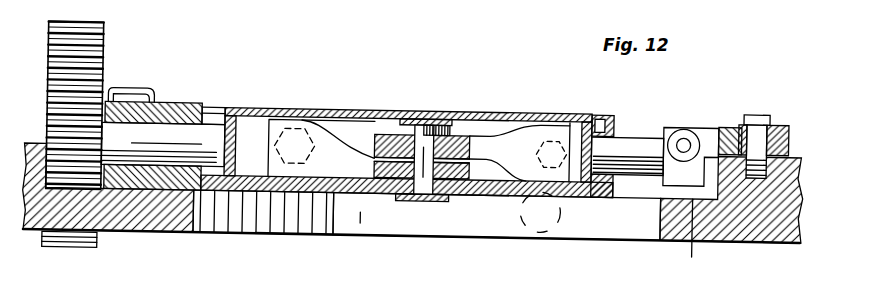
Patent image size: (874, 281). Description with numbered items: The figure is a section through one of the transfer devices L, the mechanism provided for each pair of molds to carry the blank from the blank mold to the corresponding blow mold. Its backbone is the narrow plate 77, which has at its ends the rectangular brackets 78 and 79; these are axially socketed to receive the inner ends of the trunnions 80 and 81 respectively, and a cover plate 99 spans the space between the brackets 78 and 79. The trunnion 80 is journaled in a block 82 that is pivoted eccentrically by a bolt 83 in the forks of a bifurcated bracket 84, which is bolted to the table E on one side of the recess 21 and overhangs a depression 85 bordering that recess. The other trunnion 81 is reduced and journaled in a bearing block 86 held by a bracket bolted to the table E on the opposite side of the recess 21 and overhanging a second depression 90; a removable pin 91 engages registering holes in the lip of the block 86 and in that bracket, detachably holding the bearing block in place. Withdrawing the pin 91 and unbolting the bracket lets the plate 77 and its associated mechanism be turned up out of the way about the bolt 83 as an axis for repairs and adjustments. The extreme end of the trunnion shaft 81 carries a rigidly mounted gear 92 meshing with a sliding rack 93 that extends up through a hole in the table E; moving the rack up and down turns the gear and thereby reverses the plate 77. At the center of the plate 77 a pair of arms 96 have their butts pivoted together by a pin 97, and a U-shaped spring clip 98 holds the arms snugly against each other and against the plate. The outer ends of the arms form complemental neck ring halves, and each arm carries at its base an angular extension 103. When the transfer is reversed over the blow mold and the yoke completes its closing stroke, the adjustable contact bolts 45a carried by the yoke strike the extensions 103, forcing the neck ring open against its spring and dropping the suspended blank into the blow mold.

The recess 21 is at (497, 217).
The adjustable contact bolts 45a is at (540, 212).
The plate 77 is at (513, 183).
The rectangular bracket 78 is at (587, 108).
The rectangular bracket 79 is at (230, 113).
The trunnion 80 is at (635, 132).
The trunnion 81 is at (175, 130).
The block 82 is at (705, 113).
The bolt 83 is at (683, 115).
The bifurcated bracket 84 is at (778, 113).
The depression 85 is at (687, 237).
The bearing block 86 is at (175, 100).
The depression 90 is at (173, 217).
The removable pin 91 is at (143, 95).
The gear 92 is at (97, 81).
The sliding rack 93 is at (68, 246).
The arms 96 is at (370, 147).
The pin 97 is at (438, 185).
The U-shape spring clip 98 is at (423, 194).
The cover plate 99 is at (372, 104).
The angular extension 103 is at (420, 152).
The transfer device L is at (427, 93).
The table E is at (768, 233).